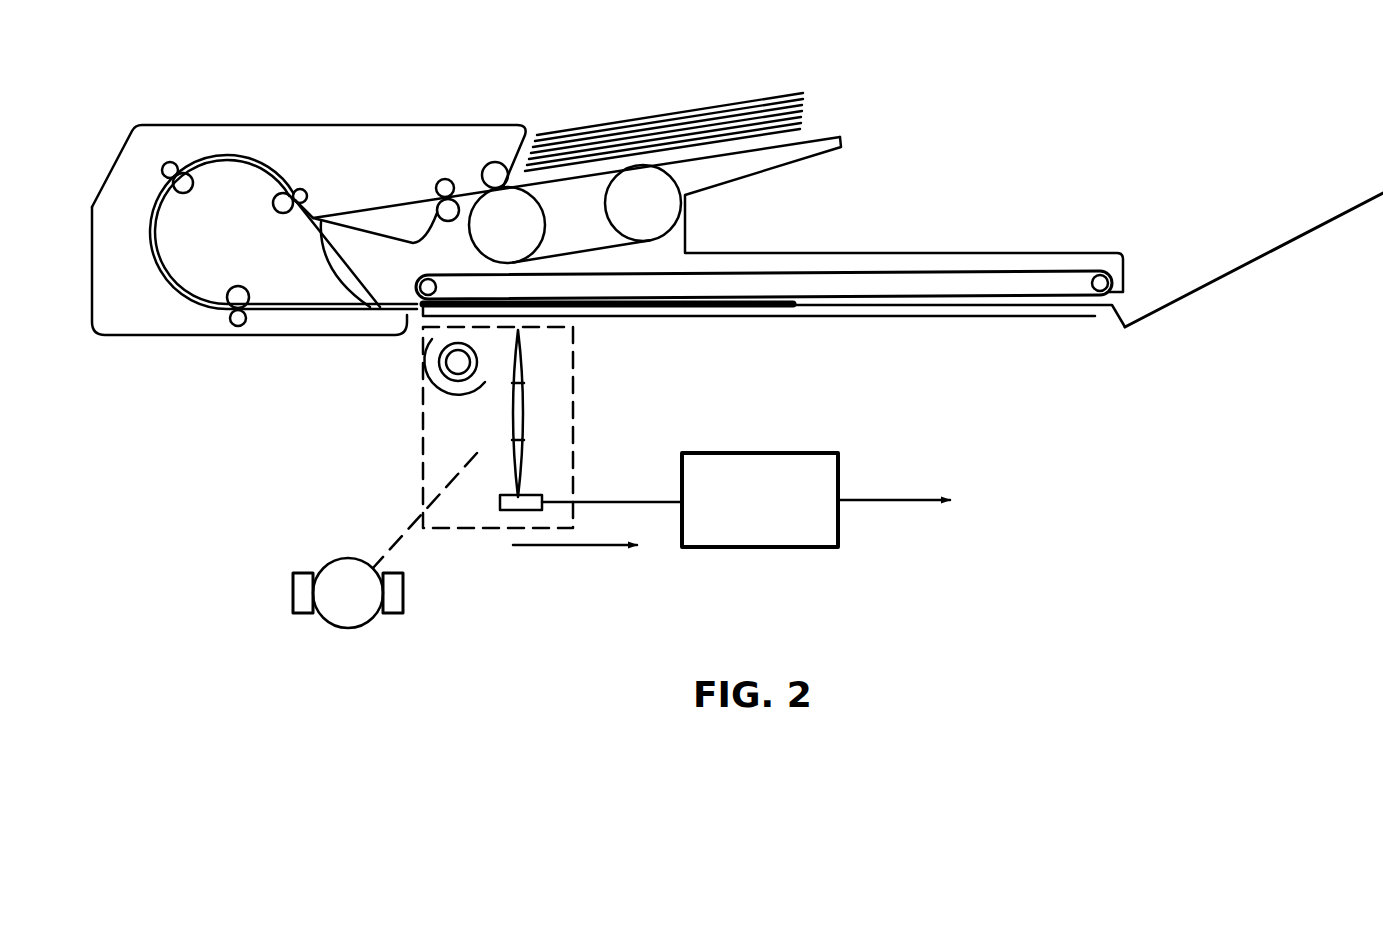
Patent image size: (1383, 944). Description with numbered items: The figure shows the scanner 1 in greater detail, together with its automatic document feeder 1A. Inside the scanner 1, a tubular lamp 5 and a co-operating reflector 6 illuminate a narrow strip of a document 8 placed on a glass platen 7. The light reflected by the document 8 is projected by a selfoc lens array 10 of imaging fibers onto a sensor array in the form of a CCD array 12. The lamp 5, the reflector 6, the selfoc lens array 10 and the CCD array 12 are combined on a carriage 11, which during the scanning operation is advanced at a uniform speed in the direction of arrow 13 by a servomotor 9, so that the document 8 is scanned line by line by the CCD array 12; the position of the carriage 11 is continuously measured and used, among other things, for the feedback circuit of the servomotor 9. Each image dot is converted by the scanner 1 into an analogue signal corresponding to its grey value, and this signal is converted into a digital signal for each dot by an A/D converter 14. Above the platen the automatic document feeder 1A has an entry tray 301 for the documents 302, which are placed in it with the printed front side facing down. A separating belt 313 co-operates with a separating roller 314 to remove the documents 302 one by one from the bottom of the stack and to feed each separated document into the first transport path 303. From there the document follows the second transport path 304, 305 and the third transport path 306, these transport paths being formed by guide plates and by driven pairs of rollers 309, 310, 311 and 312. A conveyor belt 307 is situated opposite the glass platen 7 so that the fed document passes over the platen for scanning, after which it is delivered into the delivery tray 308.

The scanner 1 is at (388, 452).
The automatic document feeder 1A is at (187, 378).
The tubular lamp 5 is at (440, 370).
The reflector 6 is at (452, 394).
The glass platen 7 is at (1085, 317).
The document 8 is at (720, 310).
The servomotor 9 is at (373, 617).
The selfoc lens array 10 is at (527, 413).
The carriage 11 is at (575, 365).
The CCD array 12 is at (512, 512).
The arrow 13 is at (577, 548).
The A/D converter 14 is at (772, 453).
The entry tray 301 is at (823, 135).
The documents 302 is at (657, 120).
The first transport path 303 is at (390, 200).
The second transport path 304 is at (213, 152).
The second transport path 305 is at (160, 272).
The third transport path 306 is at (325, 250).
The conveyor belt 307 is at (843, 267).
The delivery tray 308 is at (1175, 300).
The pair of rollers 309 is at (445, 179).
The pair of rollers 310 is at (274, 198).
The pair of rollers 311 is at (163, 166).
The pair of rollers 312 is at (237, 326).
The separating belt 313 is at (677, 180).
The separating roller 314 is at (492, 160).